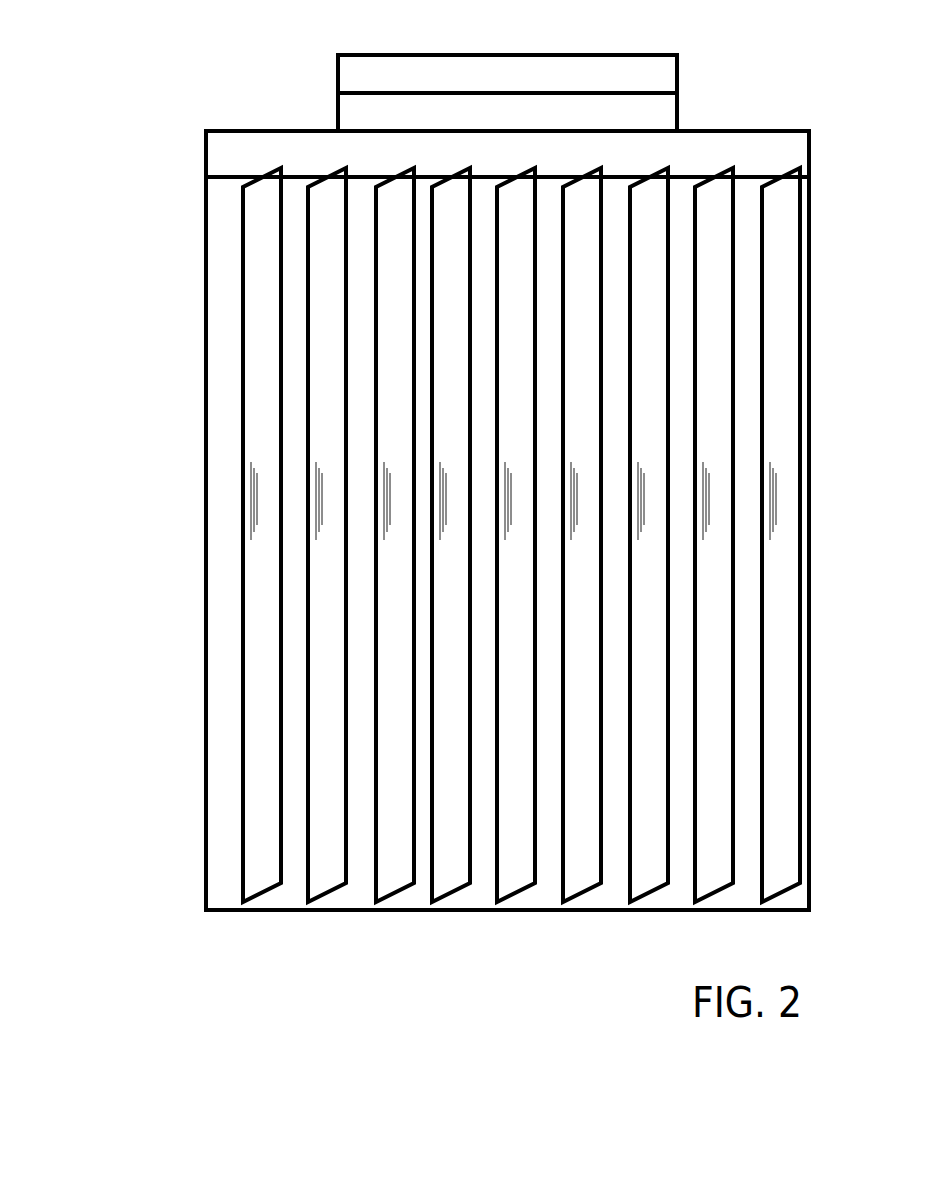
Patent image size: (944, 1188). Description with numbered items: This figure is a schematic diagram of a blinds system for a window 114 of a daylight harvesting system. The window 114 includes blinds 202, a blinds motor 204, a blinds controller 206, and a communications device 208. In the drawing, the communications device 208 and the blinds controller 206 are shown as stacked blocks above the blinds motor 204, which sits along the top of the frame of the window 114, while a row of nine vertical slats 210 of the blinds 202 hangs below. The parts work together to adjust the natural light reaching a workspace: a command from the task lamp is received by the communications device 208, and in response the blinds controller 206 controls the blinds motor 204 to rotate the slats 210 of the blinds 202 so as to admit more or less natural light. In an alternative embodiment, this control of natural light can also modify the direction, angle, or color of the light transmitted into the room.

The window 114 is at (260, 42).
The blinds 202 is at (178, 515).
The blinds motor 204 is at (627, 166).
The blinds controller 206 is at (640, 126).
The communications device 208 is at (648, 86).
The slats 210 is at (800, 197).